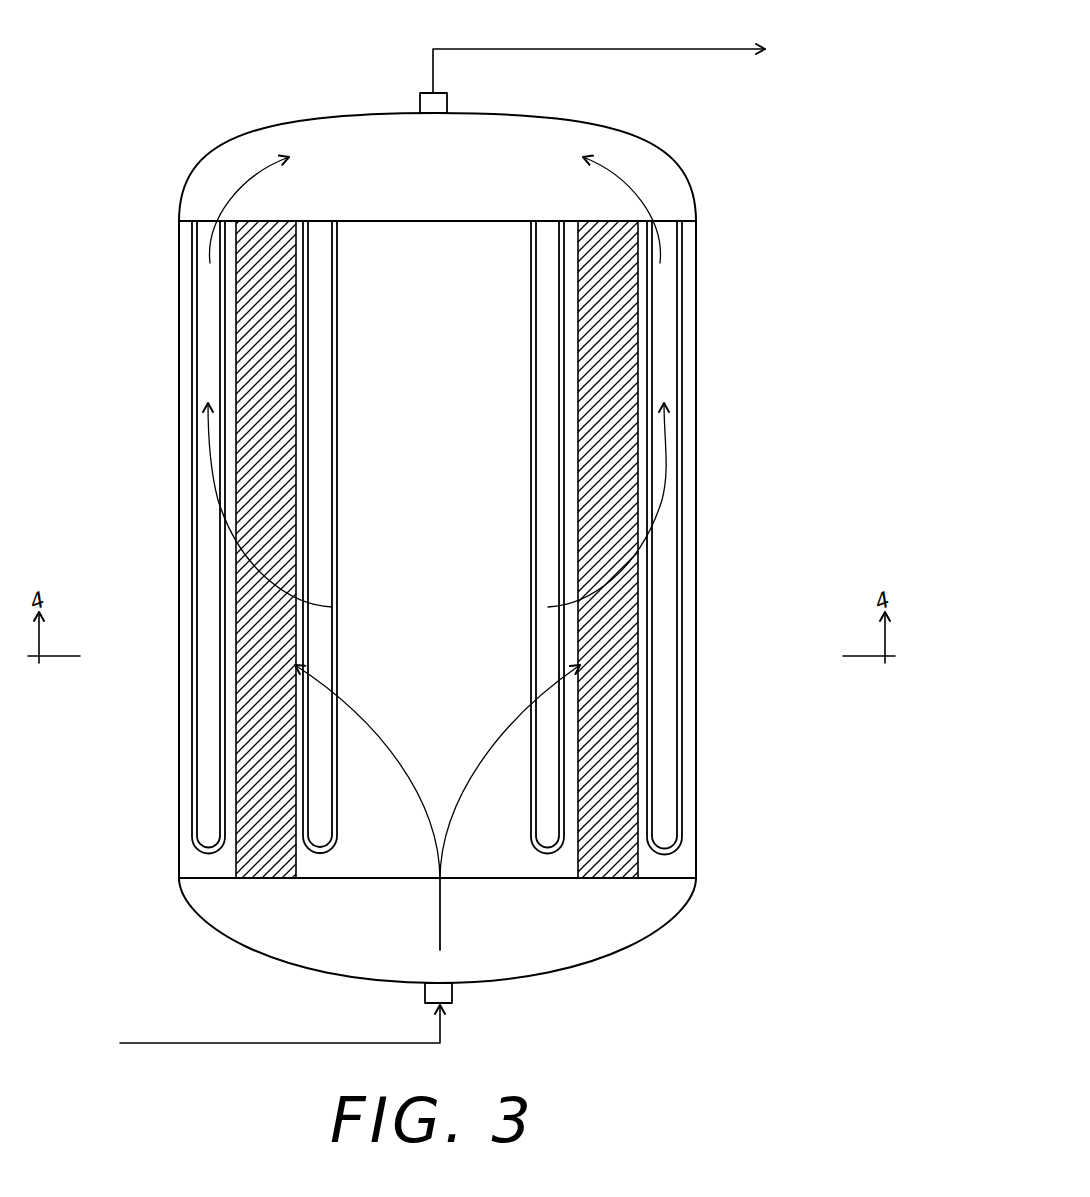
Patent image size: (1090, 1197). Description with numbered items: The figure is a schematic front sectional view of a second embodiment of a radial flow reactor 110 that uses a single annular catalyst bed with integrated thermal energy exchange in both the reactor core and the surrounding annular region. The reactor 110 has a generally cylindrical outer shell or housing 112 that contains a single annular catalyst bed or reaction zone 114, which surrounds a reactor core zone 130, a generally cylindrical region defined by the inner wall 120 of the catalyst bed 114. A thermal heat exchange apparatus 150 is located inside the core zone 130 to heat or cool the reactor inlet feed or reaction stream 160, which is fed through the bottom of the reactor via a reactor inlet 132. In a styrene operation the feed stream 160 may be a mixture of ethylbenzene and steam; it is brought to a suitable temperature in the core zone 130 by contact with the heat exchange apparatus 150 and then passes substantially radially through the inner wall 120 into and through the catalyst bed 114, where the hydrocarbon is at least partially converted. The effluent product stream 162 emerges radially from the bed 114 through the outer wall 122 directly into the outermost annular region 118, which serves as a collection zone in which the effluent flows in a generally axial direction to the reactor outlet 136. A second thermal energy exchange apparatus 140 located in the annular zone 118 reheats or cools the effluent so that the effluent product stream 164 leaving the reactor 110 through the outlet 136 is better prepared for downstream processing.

The radial flow reactor 110 is at (134, 413).
The outer shell or housing 112 is at (178, 353).
The annular catalyst bed or reaction zone 114 is at (612, 367).
The outermost annular region 118 is at (680, 860).
The inner wall of catalyst bed 120 is at (580, 864).
The outer wall of catalyst bed 122 is at (638, 866).
The reactor core zone 130 is at (457, 244).
The reactor inlet 132 is at (425, 993).
The reactor outlet 136 is at (447, 104).
The second thermal energy exchange apparatus 140 is at (200, 298).
The thermal heat exchange apparatus 150 is at (330, 300).
The reactor inlet feed or reaction stream 160 is at (220, 1045).
The effluent product stream 162 is at (237, 537).
The effluent product stream 164 is at (545, 48).